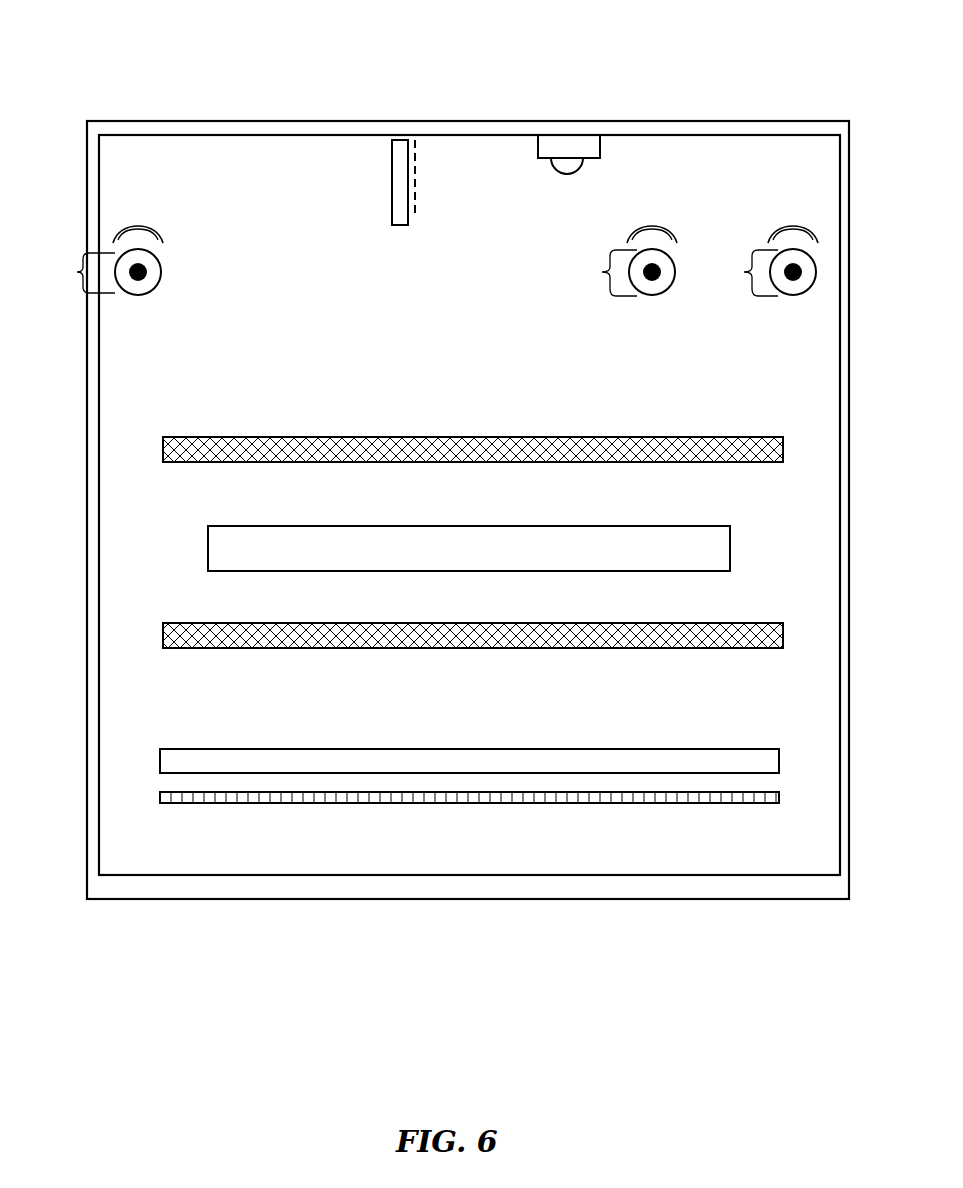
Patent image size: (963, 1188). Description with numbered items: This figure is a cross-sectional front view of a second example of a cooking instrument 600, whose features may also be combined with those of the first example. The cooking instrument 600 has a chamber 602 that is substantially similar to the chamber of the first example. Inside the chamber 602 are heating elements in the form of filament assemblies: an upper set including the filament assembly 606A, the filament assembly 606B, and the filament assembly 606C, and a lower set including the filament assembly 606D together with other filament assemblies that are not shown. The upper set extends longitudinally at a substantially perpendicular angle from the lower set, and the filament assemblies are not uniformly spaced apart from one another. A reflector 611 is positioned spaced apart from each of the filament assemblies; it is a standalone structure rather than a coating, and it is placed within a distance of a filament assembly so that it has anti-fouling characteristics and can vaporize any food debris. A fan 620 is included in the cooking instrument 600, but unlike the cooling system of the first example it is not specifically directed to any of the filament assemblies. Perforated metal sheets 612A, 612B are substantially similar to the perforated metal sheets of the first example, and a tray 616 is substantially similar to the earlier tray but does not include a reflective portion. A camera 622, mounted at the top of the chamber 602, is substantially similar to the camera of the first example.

The cooking instrument 600 is at (90, 50).
The chamber 602 is at (441, 887).
The filament assembly 606A is at (93, 272).
The filament assembly 606B is at (609, 272).
The filament assembly 606C is at (753, 272).
The filament assembly 606D is at (160, 765).
The reflector 611 is at (160, 230).
The perforated metal sheet 612A is at (160, 448).
The perforated metal sheet 612B is at (160, 636).
The tray 616 is at (208, 550).
The fan 620 is at (401, 167).
The camera 622 is at (563, 150).